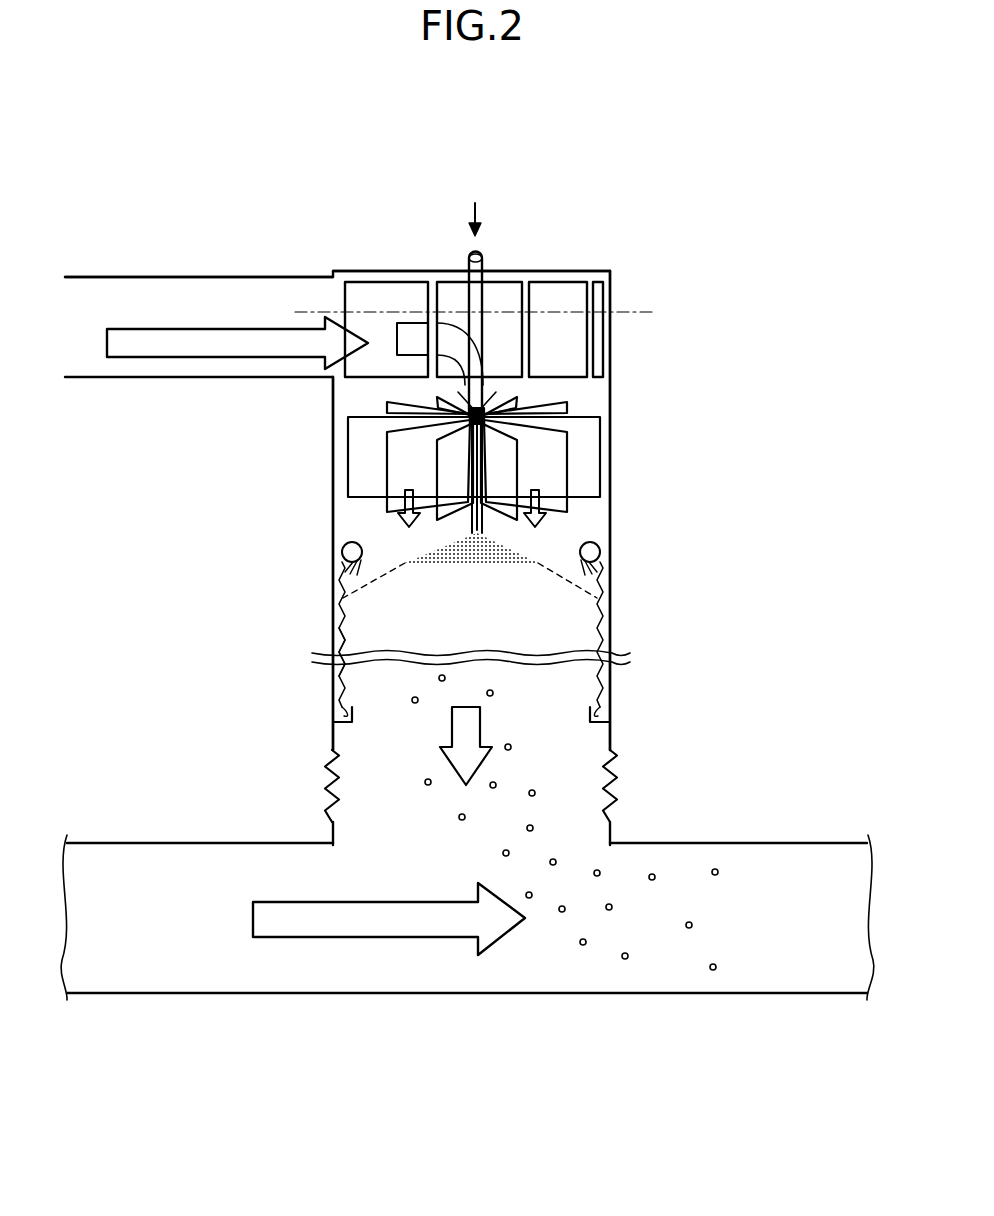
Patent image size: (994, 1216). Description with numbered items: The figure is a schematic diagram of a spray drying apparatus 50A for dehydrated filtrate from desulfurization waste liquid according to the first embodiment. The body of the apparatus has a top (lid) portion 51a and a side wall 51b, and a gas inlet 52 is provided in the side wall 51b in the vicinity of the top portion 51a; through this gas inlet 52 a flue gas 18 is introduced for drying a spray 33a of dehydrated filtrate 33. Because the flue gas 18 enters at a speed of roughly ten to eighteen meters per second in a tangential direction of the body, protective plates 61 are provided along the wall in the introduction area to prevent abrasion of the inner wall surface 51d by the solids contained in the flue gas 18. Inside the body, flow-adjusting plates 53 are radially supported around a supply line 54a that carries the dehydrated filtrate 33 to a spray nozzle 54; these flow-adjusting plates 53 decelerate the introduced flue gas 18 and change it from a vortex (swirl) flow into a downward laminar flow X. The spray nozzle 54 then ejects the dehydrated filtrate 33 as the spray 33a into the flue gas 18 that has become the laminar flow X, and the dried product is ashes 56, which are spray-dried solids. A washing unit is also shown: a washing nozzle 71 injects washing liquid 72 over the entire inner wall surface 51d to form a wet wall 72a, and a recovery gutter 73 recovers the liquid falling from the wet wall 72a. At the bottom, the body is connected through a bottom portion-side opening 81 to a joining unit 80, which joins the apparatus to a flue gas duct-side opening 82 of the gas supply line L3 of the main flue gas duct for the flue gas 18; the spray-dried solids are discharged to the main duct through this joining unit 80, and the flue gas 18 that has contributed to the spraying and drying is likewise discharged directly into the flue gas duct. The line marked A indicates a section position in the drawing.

The spray drying apparatus 50A is at (373, 184).
The top portion 51a is at (360, 270).
The side wall 51b is at (332, 462).
The inner wall surface 51d is at (608, 548).
The gas inlet 52 is at (194, 277).
The flue gas 18 is at (195, 349).
The dehydrated filtrate 33 is at (483, 212).
The spray 33a is at (460, 563).
The supply line 54a is at (468, 292).
The spray nozzle 54 is at (470, 518).
The protective plates 61 is at (565, 293).
The flow-adjusting plates 53 is at (586, 460).
The laminar flow X is at (555, 522).
The washing nozzle 71 is at (342, 556).
The washing liquid 72 is at (606, 591).
The wet wall 72a is at (338, 655).
The recovery gutter 73 is at (350, 727).
The bottom portion-side opening 81 is at (612, 729).
The joining unit 80 is at (614, 772).
The flue gas duct-side opening 82 is at (340, 838).
The ashes 56 is at (535, 793).
The section line A is at (475, 300).
The gas supply line L3 is at (653, 994).